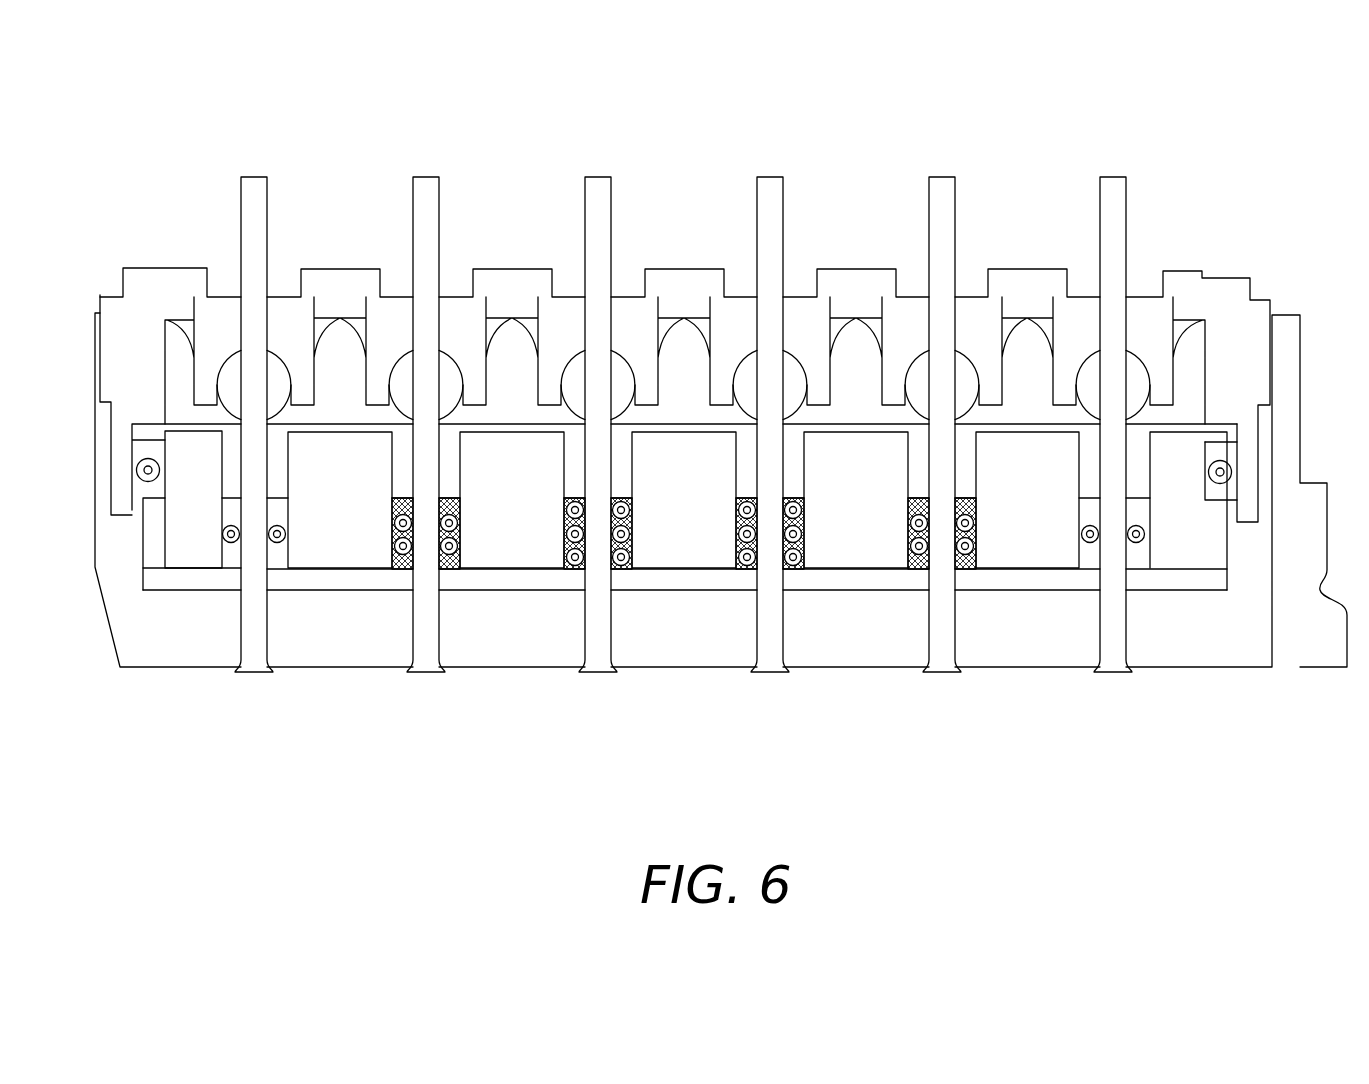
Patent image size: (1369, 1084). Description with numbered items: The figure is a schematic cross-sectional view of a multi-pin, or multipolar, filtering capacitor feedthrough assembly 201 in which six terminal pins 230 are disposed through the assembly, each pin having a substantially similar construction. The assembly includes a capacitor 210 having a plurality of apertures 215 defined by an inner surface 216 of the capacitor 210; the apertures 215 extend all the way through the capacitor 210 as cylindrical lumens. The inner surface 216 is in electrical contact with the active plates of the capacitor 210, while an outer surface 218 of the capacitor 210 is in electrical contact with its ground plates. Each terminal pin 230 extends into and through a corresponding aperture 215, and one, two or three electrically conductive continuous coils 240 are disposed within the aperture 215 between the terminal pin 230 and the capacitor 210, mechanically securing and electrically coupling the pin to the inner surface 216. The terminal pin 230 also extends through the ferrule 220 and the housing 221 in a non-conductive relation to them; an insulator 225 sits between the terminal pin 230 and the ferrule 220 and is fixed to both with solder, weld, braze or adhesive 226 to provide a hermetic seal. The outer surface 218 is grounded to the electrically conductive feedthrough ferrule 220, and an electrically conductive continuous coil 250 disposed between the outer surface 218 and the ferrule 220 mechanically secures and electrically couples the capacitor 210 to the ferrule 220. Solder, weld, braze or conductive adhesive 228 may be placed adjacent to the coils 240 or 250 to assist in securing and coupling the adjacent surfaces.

The filtering capacitor feedthrough assembly 201 is at (1295, 127).
The capacitor 210 is at (155, 508).
The aperture 215 is at (219, 572).
The inner surface 216 is at (218, 517).
The outer surface 218 is at (170, 451).
The ferrule 220 is at (143, 270).
The housing 221 is at (112, 606).
The insulator 225 is at (292, 295).
The solder, weld, braze or adhesive 226 is at (237, 373).
The solder, weld, braze or conductive adhesive 228 is at (278, 460).
The terminal pin 230 is at (260, 672).
The electrically conductive continuous coil 240 is at (222, 534).
The electrically conductive continuous coil 250 is at (136, 470).